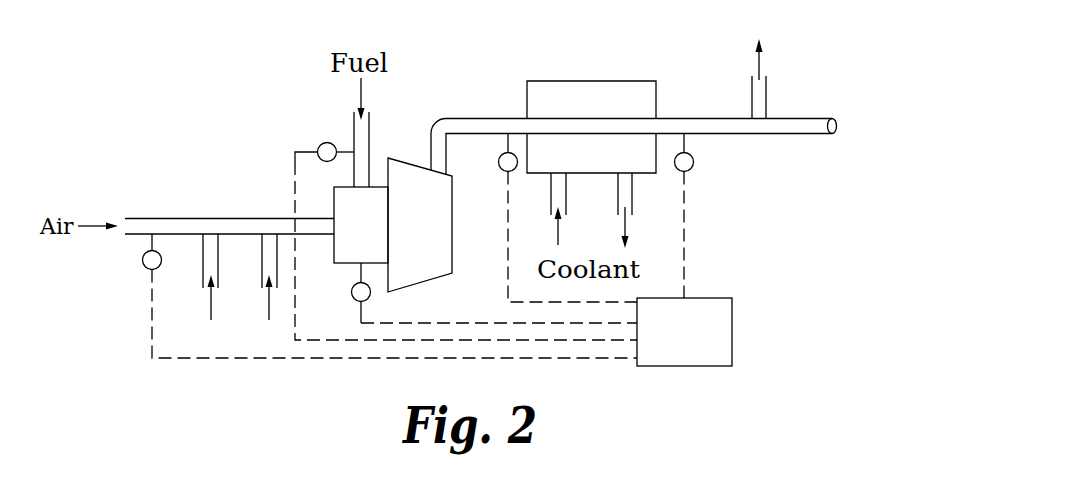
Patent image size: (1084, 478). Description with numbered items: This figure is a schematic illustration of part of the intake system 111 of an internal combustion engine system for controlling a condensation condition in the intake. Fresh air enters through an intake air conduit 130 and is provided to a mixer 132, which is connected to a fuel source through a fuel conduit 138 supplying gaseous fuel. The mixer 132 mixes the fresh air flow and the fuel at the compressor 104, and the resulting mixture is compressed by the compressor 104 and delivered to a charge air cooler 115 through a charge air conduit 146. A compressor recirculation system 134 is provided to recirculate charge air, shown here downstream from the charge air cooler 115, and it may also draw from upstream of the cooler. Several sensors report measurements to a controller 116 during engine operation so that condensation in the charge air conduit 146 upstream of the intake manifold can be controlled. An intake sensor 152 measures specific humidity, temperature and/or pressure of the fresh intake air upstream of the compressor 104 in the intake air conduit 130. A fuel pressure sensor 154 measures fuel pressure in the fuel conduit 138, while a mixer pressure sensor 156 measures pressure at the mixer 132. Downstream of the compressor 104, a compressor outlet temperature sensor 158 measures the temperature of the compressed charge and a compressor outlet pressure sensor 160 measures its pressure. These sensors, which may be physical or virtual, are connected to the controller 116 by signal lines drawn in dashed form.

The intake system 111 is at (834, 21).
The intake air conduit 130 is at (231, 218).
The compressor recirculation system 134 is at (261, 282).
The fuel conduit 138 is at (354, 118).
The mixer 132 is at (378, 239).
The compressor 104 is at (438, 239).
The charge air conduit 146 is at (478, 118).
The charge air cooler 115 is at (565, 81).
The controller 116 is at (703, 346).
The intake sensor 152 is at (161, 264).
The fuel pressure sensor 154 is at (317, 150).
The mixer pressure sensor 156 is at (352, 287).
The compressor outlet temperature sensor 158 is at (498, 156).
The compressor outlet pressure sensor 160 is at (694, 164).